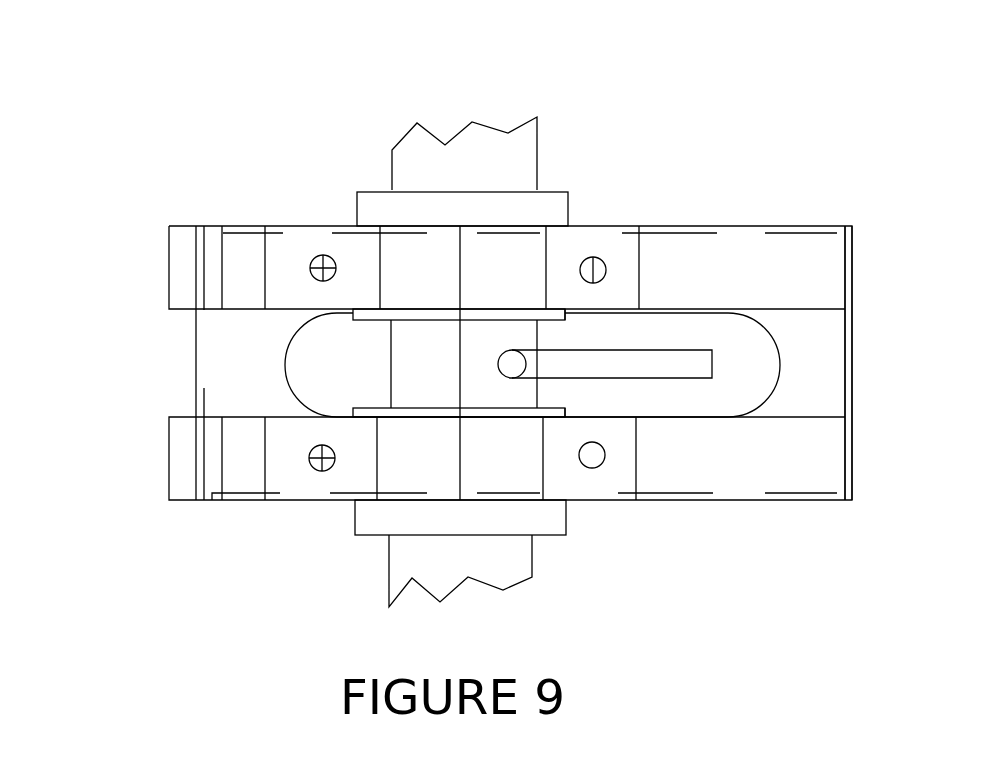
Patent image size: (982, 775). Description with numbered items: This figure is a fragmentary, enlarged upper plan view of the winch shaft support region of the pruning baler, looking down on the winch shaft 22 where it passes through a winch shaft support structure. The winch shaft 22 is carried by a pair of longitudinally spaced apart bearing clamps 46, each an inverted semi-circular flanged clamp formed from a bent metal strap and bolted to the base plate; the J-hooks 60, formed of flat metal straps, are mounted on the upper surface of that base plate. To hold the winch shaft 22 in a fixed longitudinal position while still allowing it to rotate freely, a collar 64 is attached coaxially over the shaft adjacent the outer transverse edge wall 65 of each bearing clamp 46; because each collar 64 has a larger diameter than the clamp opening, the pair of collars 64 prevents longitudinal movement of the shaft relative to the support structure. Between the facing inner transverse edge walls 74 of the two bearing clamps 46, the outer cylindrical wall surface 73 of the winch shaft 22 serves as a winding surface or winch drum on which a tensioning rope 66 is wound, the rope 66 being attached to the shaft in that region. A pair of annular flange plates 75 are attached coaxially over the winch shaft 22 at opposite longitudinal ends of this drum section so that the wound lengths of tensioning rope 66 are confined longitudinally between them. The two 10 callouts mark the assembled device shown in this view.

The locking device 10 is at (320, 365).
The winch shaft 22 is at (468, 124).
The bearing clamp 46 is at (310, 222).
The J-hook 60 is at (192, 223).
The collar 64 is at (571, 190).
The outer transverse edge wall 65 is at (342, 223).
The tensioning rope 66 is at (677, 348).
The outer cylindrical wall surface 73 is at (386, 358).
The inner transverse edge wall 74 is at (437, 307).
The annular flange plate 75 is at (571, 320).